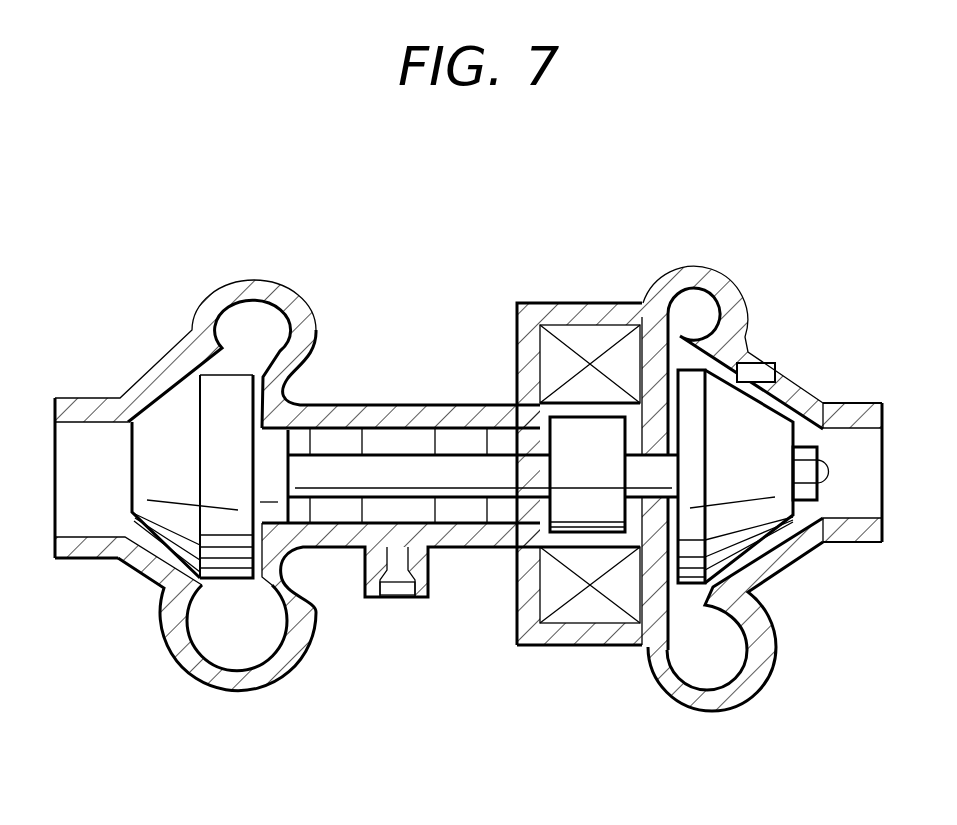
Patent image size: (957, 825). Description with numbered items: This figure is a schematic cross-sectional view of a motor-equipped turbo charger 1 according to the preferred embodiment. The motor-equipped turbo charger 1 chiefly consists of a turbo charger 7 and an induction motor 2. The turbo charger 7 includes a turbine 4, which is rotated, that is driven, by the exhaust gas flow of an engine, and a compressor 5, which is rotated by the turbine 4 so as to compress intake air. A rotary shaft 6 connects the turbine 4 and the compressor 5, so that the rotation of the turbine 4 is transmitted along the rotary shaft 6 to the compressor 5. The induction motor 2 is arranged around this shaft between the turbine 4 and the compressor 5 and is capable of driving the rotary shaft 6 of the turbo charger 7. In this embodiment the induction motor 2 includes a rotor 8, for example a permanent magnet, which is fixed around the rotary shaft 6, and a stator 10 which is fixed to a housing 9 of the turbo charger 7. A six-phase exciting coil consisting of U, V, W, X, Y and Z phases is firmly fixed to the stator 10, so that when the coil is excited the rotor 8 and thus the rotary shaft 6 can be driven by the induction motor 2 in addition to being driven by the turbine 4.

The motor-equipped turbo charger 1 is at (590, 174).
The induction motor 2 is at (637, 218).
The turbine 4 is at (187, 437).
The compressor 5 is at (727, 463).
The rotary shaft 6 is at (385, 468).
The turbo charger 7 is at (230, 218).
The rotor 8 is at (570, 425).
The housing 9 is at (412, 415).
The stator 10 is at (597, 337).